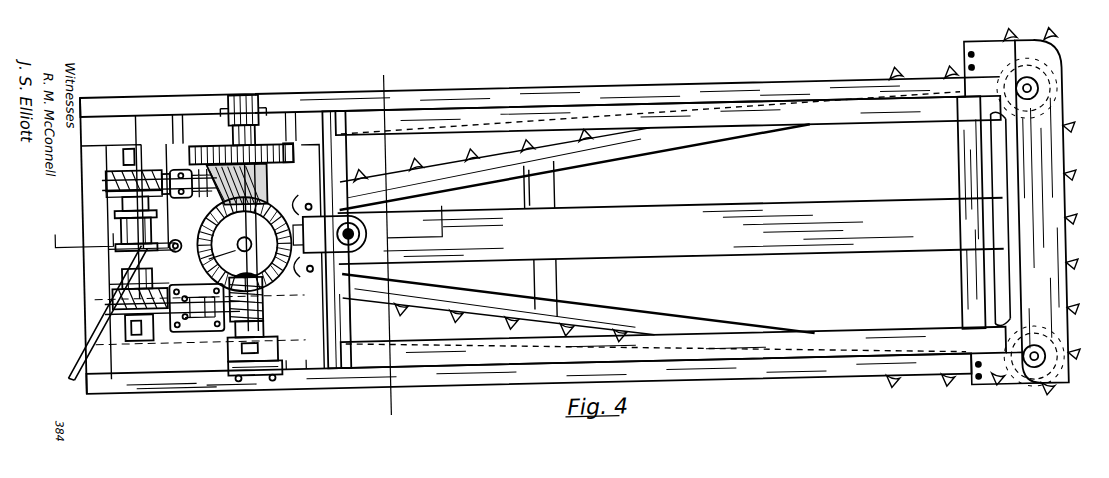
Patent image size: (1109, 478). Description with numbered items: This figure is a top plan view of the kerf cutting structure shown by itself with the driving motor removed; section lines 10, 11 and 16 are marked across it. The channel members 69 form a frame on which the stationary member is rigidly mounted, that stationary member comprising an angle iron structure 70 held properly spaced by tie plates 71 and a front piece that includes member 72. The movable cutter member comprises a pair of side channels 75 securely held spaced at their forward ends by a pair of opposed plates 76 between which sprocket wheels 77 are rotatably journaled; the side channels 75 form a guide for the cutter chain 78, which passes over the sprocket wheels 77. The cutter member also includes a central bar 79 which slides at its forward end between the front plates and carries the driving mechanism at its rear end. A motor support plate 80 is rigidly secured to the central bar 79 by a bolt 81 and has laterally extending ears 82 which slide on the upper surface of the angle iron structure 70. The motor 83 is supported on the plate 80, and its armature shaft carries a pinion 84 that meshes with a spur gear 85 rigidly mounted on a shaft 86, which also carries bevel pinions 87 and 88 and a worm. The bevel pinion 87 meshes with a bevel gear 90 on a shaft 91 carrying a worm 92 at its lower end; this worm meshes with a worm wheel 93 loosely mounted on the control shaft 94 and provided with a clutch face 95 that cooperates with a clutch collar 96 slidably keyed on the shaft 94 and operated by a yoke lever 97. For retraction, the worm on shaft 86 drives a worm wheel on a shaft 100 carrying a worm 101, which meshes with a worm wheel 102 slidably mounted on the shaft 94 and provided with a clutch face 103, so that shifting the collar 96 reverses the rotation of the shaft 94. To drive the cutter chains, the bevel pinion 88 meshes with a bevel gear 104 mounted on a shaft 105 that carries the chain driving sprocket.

The section line 10 is at (374, 413).
The section line 11 is at (248, 218).
The section line 16 is at (364, 72).
The channel members 69 is at (664, 103).
The angle iron structure 70 is at (752, 122).
The tie plates 71 is at (540, 203).
The front piece member 72 is at (962, 286).
The side channels 75 is at (626, 160).
The opposed plates 76 is at (1040, 242).
The sprocket wheels 77 is at (1030, 86).
The cutter chain 78 is at (480, 152).
The central bar 79 is at (790, 222).
The motor support plate 80 is at (671, 267).
The bolt 81 is at (356, 242).
The laterally extending ears 82 is at (192, 133).
The motor 83 is at (262, 322).
The pinion 84 is at (255, 465).
The spur gear 85 is at (278, 146).
The shaft 86 is at (254, 198).
The bevel pinion 87 is at (262, 176).
The bevel pinion 88 is at (260, 285).
The bevel gear 90 is at (214, 208).
The shaft 91 is at (163, 172).
The worm 92 is at (104, 194).
The worm wheel 93 is at (104, 176).
The shaft 94 is at (120, 206).
The clutch face 95 is at (174, 199).
The clutch collar 96 is at (118, 236).
The yoke lever 97 is at (100, 318).
The shaft 100 is at (192, 324).
The worm 101 is at (118, 308).
The worm wheel 102 is at (120, 323).
The clutch face 103 is at (108, 294).
The bevel gear 104 is at (280, 232).
The shaft 105 is at (206, 257).